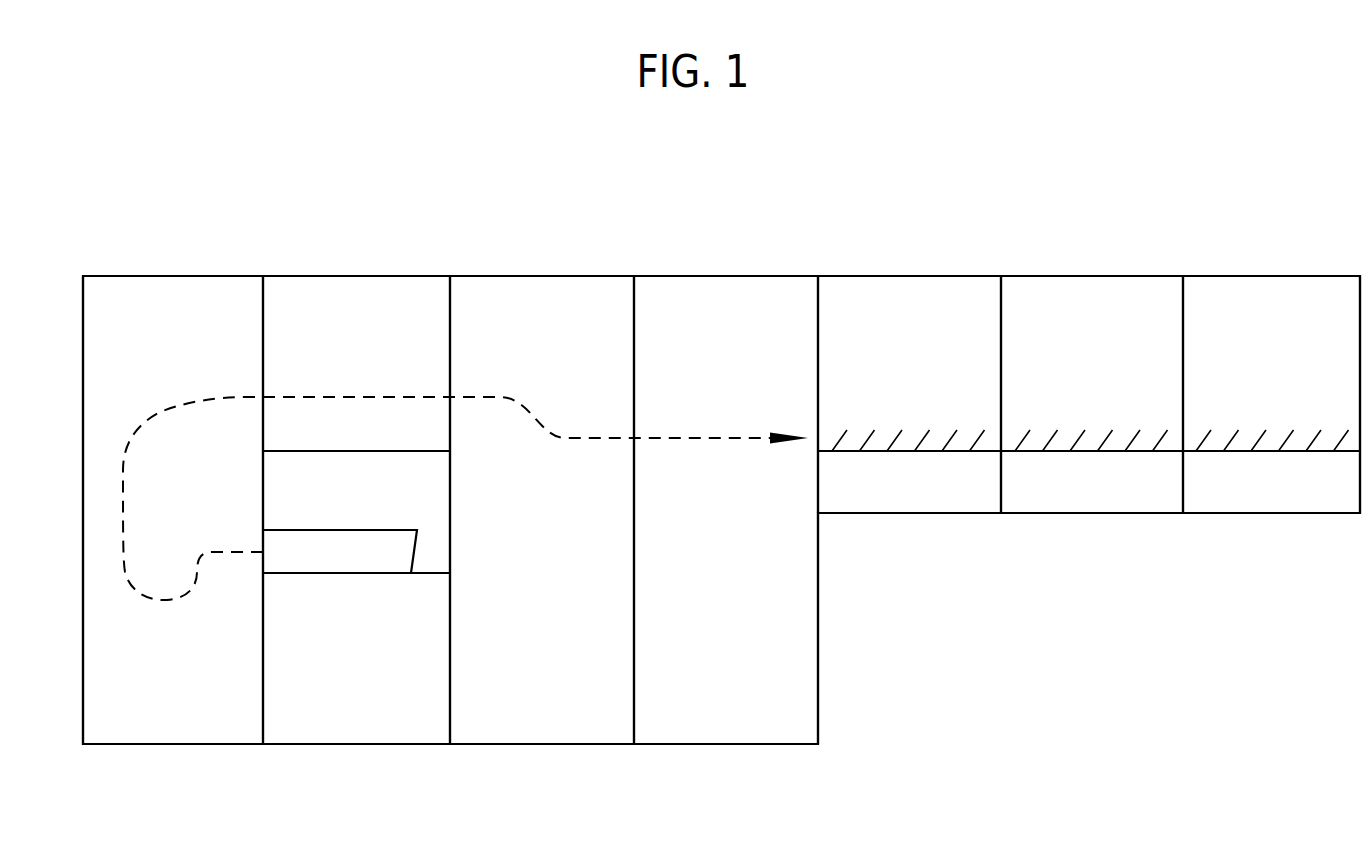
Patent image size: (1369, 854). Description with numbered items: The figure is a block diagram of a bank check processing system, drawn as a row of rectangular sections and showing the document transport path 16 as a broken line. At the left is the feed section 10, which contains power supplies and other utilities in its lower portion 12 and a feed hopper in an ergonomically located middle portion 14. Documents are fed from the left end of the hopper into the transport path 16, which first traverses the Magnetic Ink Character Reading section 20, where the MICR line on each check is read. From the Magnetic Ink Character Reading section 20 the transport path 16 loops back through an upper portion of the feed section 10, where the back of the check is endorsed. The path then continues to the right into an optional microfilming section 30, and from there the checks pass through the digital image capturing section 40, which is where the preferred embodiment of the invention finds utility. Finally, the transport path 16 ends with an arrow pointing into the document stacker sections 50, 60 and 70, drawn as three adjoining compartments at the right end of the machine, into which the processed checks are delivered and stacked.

The feed section 10 is at (347, 221).
The lower portion 12 is at (392, 717).
The middle portion 14 is at (323, 513).
The transport path 16 is at (465, 409).
The Magnetic Ink Character Reading section 20 is at (195, 273).
The microfilming section 30 is at (597, 274).
The digital image capturing section 40 is at (767, 274).
The document stacker section 50 is at (938, 275).
The document stacker section 60 is at (1108, 275).
The document stacker section 70 is at (1280, 275).